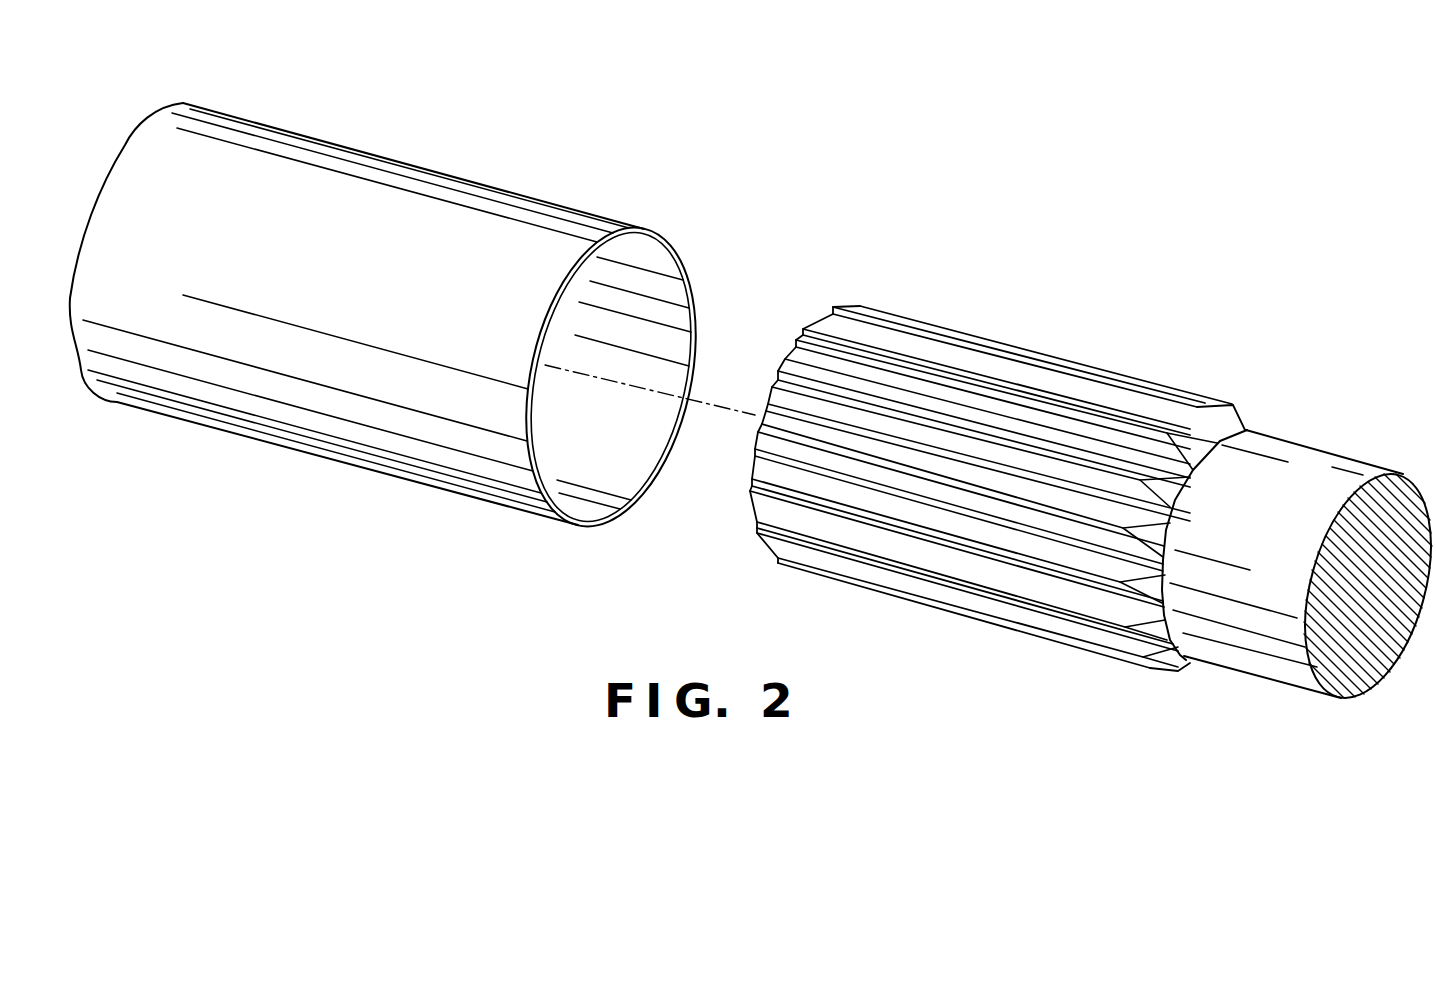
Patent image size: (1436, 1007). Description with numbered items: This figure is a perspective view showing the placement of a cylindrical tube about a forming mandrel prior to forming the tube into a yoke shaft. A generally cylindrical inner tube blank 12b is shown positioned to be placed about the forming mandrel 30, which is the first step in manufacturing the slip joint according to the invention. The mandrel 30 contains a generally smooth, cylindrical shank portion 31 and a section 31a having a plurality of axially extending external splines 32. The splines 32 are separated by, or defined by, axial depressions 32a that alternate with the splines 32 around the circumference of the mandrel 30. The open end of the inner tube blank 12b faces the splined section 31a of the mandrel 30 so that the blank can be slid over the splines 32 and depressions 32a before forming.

The inner tube blank 12b is at (475, 210).
The forming mandrel 30 is at (1093, 493).
The shank portion 31 is at (1238, 668).
The section having external splines 31a is at (997, 435).
The external splines 32 is at (991, 434).
The axial depressions 32a is at (896, 388).